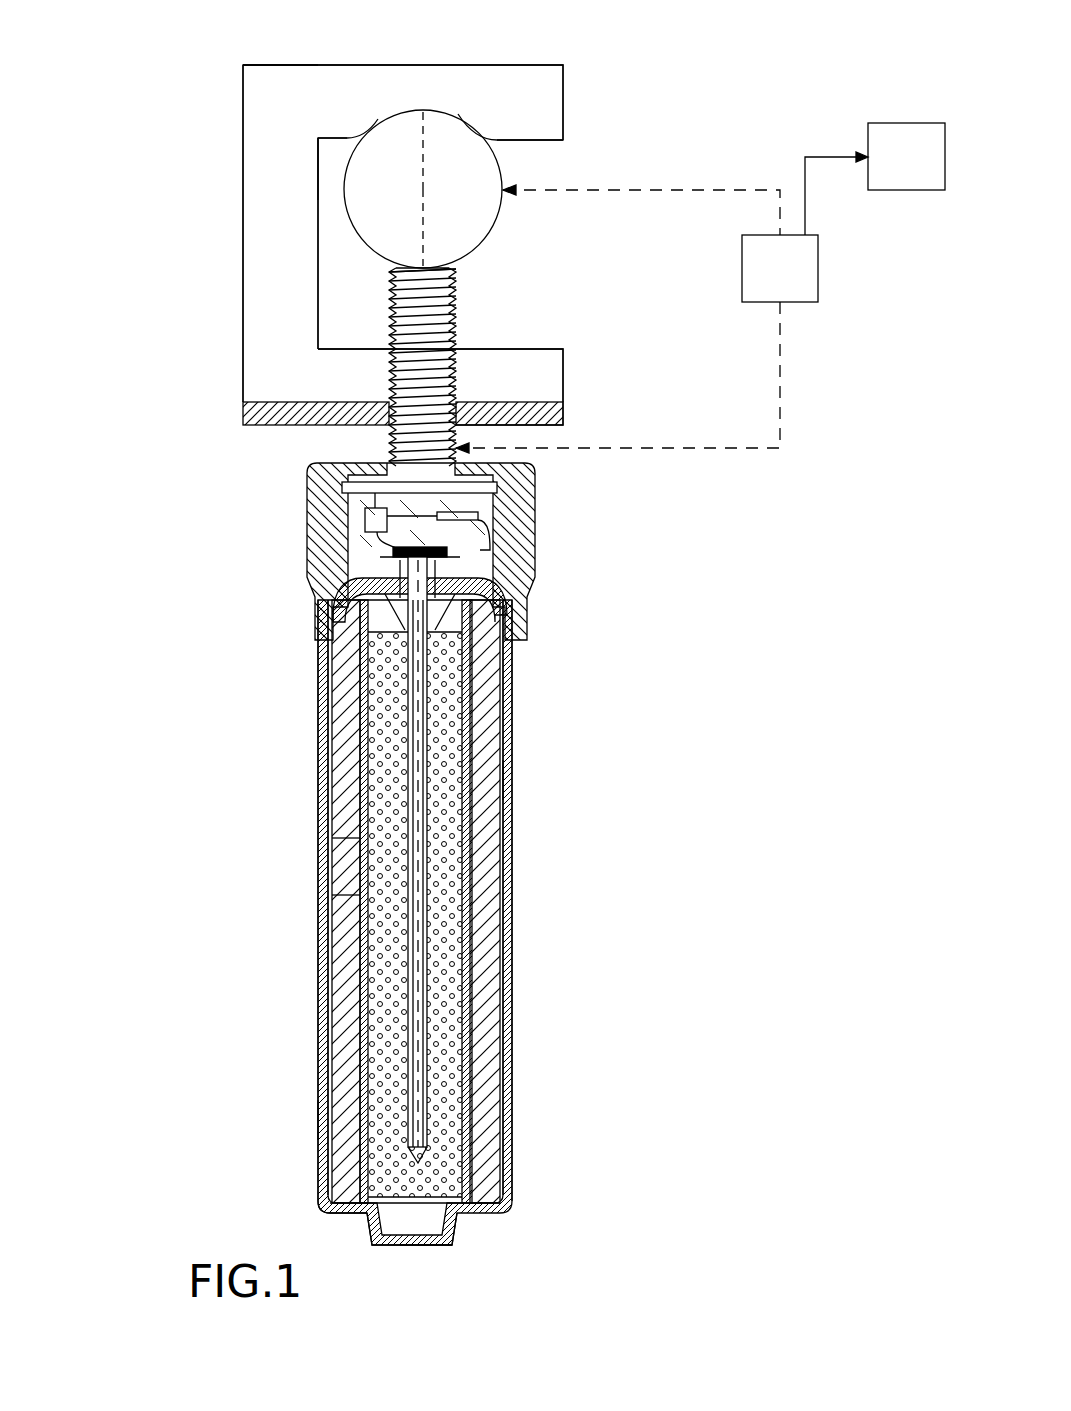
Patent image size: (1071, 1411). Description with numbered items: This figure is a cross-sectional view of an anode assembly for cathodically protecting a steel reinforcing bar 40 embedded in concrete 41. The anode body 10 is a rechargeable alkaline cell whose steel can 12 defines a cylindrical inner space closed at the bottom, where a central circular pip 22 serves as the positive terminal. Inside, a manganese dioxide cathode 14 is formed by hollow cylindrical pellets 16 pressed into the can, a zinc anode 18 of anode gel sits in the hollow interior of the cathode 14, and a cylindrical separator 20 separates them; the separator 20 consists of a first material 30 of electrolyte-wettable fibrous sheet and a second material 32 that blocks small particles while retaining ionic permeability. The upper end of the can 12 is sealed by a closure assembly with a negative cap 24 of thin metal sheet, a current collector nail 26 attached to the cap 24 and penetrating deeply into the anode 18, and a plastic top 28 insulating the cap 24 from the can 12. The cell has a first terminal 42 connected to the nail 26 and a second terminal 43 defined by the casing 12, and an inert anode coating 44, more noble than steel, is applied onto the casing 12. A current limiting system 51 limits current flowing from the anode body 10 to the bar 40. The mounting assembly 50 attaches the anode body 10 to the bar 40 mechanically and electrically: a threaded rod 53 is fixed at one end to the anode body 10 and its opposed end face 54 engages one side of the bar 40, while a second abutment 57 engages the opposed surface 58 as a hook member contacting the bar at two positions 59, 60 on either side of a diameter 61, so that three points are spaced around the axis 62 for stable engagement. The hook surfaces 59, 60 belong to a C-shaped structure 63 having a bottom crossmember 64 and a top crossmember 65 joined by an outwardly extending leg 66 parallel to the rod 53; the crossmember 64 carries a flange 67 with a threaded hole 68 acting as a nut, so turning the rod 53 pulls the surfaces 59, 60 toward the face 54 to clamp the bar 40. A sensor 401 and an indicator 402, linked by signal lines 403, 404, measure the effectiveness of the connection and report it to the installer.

The anode body 10 is at (615, 937).
The steel can 12 is at (325, 805).
The manganese dioxide cathode 14 is at (325, 1010).
The hollow cylindrical pellets 16 is at (500, 1060).
The zinc anode 18 is at (455, 858).
The cylindrical separator 20 is at (508, 722).
The central circular pip 22 is at (455, 1232).
The negative cap 24 is at (385, 562).
The current collector nail 26 is at (418, 745).
The plastic top 28 is at (500, 600).
The first material 30 is at (360, 838).
The second material 32 is at (360, 895).
The steel reinforcing bar 40 is at (478, 215).
The concrete 41 is at (665, 318).
The first terminal 42 is at (365, 518).
The second terminal 43 is at (435, 1245).
The anode coating 44 is at (510, 787).
The mounting assembly 50 is at (165, 347).
The current limiting system 51 is at (515, 514).
The threaded rod 53 is at (440, 330).
The end face 54 is at (405, 277).
The second abutment 57 is at (606, 128).
The rear surface of bar 58 is at (460, 104).
The first contact position 59 is at (392, 112).
The second contact position 60 is at (466, 118).
The diameter 61 is at (422, 168).
The axis 62 is at (422, 212).
The C-shaped structure 63 is at (205, 196).
The bottom crossmember 64 is at (550, 378).
The top crossmember 65 is at (457, 78).
The leg 66 is at (258, 267).
The flange 67 is at (545, 413).
The threaded hole 68 is at (370, 407).
The sensor 401 is at (810, 288).
The indicator 402 is at (906, 190).
The signal line 403 is at (520, 188).
The signal line 404 is at (470, 450).